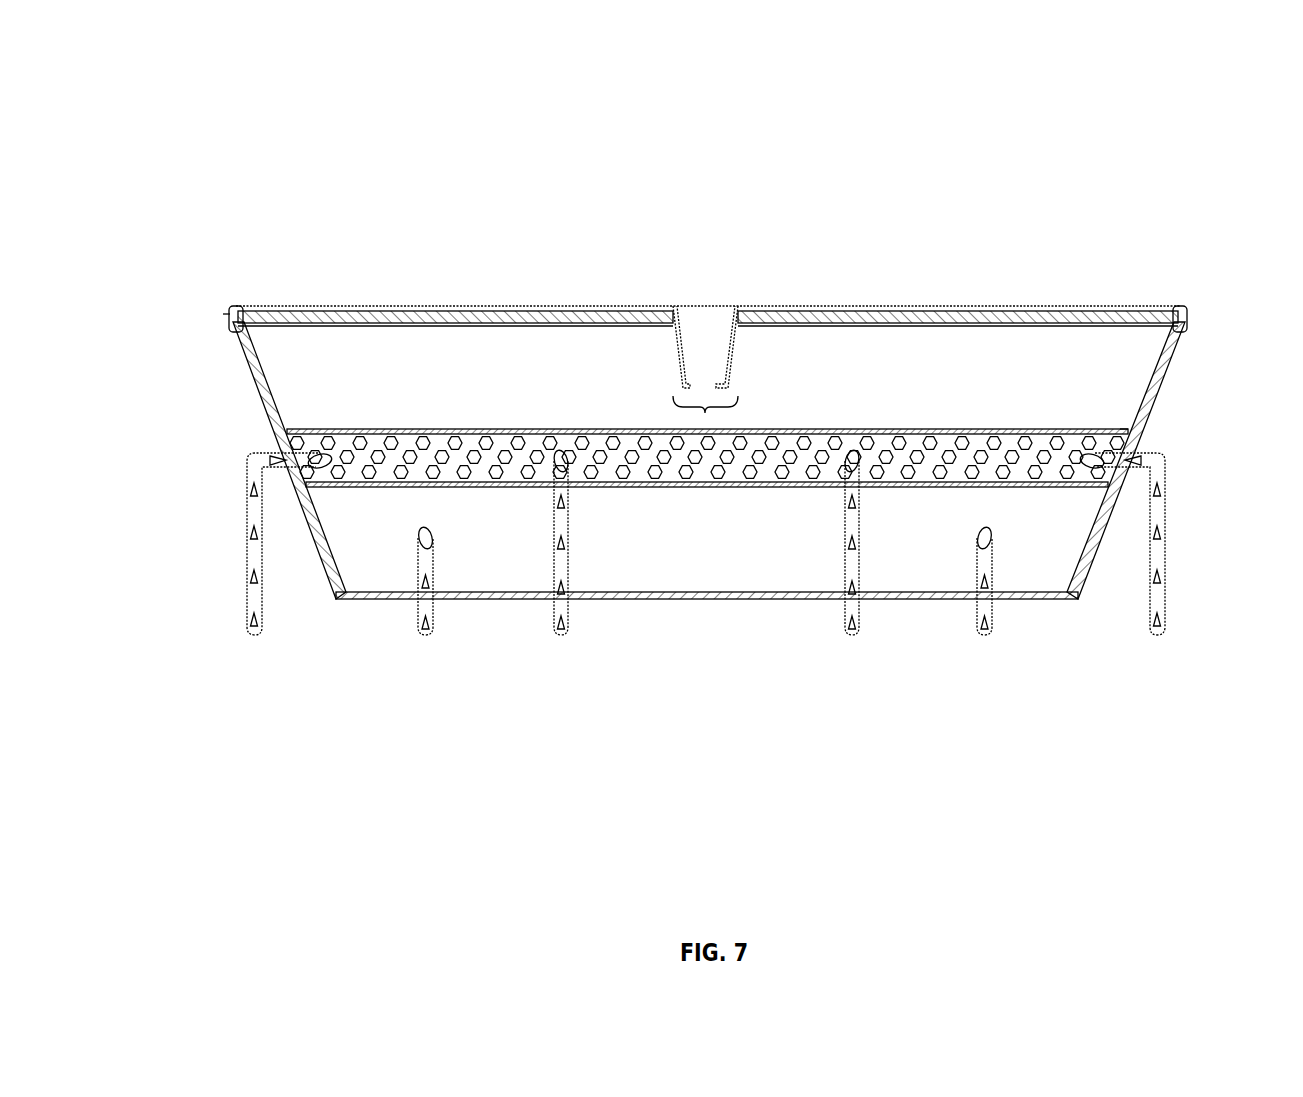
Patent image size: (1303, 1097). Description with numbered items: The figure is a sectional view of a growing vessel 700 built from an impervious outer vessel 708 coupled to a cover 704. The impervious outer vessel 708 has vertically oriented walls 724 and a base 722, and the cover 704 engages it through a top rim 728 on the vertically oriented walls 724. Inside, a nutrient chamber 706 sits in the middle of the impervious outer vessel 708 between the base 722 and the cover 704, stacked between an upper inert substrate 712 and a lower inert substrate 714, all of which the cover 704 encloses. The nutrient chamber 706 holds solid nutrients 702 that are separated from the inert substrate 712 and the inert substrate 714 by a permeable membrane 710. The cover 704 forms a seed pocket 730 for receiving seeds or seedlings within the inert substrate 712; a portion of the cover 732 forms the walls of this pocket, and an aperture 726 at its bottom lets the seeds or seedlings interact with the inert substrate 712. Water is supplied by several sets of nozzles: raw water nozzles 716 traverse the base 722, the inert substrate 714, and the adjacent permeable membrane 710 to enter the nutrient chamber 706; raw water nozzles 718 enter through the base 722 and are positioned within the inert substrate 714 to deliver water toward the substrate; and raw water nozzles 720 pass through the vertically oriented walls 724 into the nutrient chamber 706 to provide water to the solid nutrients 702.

The growing vessel 700 is at (1195, 110).
The solid nutrients 702 is at (990, 443).
The cover 704 is at (1115, 305).
The nutrient chamber 706 is at (421, 411).
The impervious outer vessel 708 is at (723, 622).
The permeable membrane 710 is at (560, 431).
The inert substrate 712 is at (1128, 372).
The inert substrate 714 is at (366, 550).
The raw water nozzles 716 is at (560, 637).
The raw water nozzles 718 is at (424, 637).
The raw water nozzles 720 is at (247, 596).
The base 722 is at (1040, 600).
The vertically oriented walls 724 is at (1138, 432).
The aperture 726 is at (740, 409).
The top rim 728 is at (232, 318).
The seed pocket 730 is at (700, 356).
The portion of the cover 732 is at (733, 332).